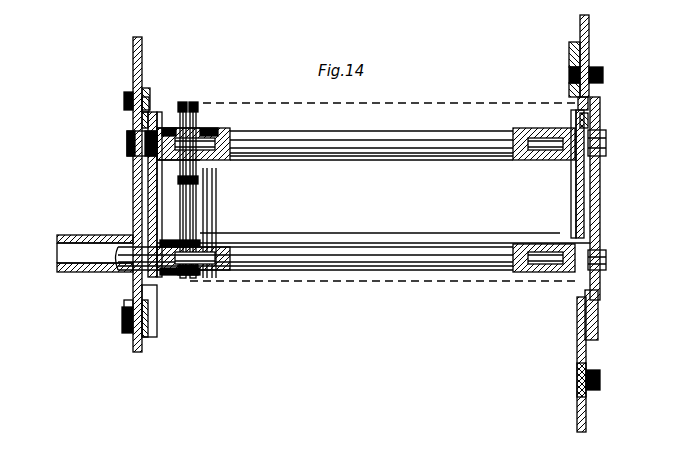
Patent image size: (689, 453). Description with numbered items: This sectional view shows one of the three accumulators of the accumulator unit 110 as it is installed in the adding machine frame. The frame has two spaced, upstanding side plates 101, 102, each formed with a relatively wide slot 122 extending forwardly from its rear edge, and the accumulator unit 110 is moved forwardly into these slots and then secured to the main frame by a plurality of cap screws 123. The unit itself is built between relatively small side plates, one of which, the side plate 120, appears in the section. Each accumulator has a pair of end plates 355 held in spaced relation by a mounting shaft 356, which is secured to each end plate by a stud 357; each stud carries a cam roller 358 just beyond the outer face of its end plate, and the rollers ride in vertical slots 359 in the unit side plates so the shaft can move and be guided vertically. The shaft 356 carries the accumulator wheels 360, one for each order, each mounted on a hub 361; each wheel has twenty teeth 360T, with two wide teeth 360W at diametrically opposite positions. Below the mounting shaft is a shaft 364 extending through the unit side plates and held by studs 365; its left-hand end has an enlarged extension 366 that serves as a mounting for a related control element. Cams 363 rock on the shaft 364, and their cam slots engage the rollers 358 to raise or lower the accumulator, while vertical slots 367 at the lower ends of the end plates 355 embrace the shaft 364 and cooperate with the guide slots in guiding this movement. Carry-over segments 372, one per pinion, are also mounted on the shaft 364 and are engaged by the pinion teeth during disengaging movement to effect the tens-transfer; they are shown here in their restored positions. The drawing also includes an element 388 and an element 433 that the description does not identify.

The side plate 101 is at (142, 352).
The side plate 102 is at (589, 30).
The accumulator unit 110 is at (606, 197).
The side plate 120 is at (600, 233).
The slot 122 is at (577, 372).
The cap screw 123 is at (125, 312).
The end plate 355 is at (148, 204).
The mounting shaft 356 is at (318, 153).
The stud 357 is at (128, 150).
The cam roller 358 is at (140, 125).
The vertical slot 359 is at (140, 118).
The accumulator wheel 360 is at (200, 116).
The tooth 360T is at (192, 103).
The wide tooth 360W is at (200, 182).
The hub 361 is at (215, 130).
The cam 363 is at (155, 178).
The shaft 364 is at (255, 270).
The stud 365 is at (606, 260).
The enlarged extension 366 is at (78, 272).
The vertical slot 367 is at (200, 228).
The carry-over segment 372 is at (205, 203).
The base line 388 is at (355, 236).
The bore 433 is at (70, 250).